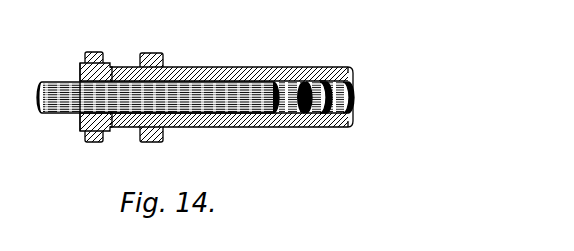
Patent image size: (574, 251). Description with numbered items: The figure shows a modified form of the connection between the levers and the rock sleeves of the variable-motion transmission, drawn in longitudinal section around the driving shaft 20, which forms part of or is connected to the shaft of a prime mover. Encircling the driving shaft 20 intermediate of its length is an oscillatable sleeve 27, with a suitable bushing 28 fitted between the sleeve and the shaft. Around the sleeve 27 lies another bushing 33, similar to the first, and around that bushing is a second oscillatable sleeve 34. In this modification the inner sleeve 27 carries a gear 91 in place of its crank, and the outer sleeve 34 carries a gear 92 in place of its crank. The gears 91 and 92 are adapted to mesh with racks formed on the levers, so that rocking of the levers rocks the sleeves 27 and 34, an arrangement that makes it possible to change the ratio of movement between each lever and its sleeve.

The driving shaft 20 is at (62, 87).
The gear 91 is at (83, 133).
The gear 92 is at (162, 54).
The oscillatable sleeve 34 is at (298, 67).
The bushing 28 is at (273, 130).
The oscillatable sleeve 27 is at (303, 130).
The bushing 33 is at (353, 90).